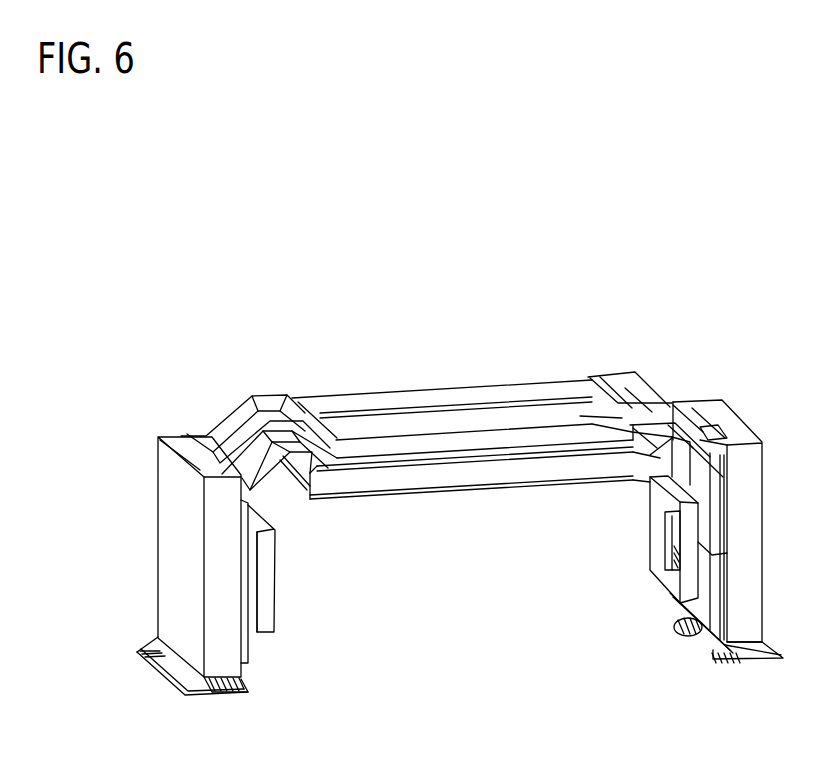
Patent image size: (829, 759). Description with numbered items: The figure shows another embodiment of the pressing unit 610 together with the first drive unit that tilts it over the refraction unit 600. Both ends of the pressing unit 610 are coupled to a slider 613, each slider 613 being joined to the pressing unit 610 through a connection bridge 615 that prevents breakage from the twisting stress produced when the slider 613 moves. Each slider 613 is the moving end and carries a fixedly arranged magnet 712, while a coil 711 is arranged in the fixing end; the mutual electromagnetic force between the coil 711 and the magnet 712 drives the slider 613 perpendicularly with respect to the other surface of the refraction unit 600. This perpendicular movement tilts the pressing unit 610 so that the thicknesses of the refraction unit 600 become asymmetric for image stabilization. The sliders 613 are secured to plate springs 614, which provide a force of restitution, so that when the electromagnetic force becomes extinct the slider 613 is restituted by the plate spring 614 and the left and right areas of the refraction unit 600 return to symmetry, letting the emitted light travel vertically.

The refraction unit 600 is at (511, 500).
The pressing unit 610 is at (258, 352).
The slider 613 is at (226, 579).
The plate spring 614 is at (247, 687).
The connection bridge 615 is at (224, 433).
The coil 711 is at (665, 572).
The magnet 712 is at (687, 621).